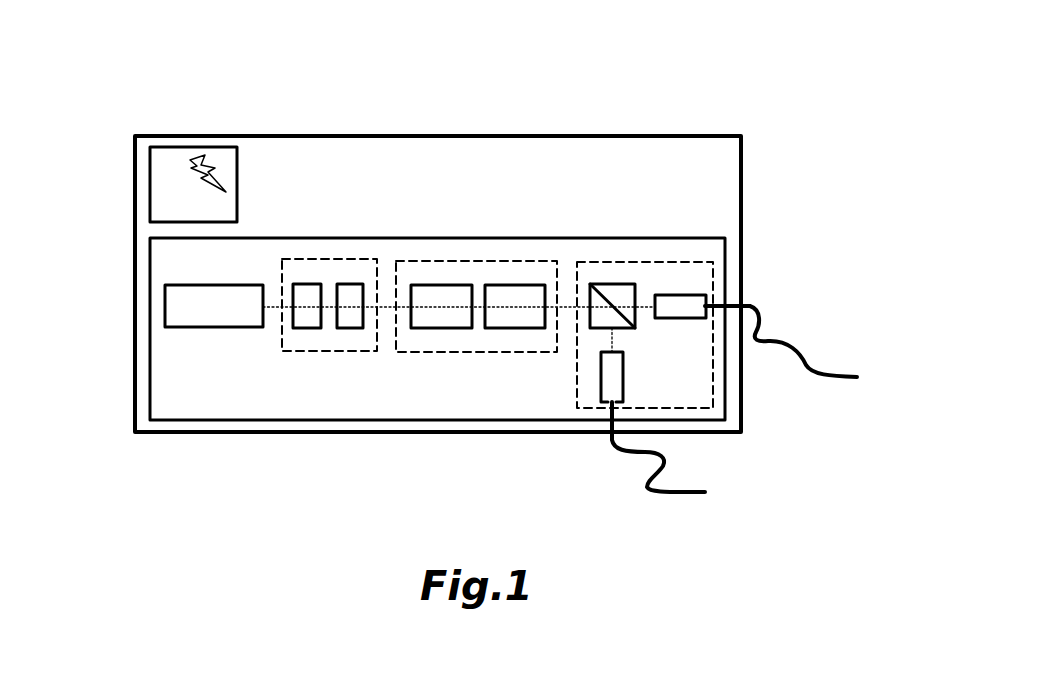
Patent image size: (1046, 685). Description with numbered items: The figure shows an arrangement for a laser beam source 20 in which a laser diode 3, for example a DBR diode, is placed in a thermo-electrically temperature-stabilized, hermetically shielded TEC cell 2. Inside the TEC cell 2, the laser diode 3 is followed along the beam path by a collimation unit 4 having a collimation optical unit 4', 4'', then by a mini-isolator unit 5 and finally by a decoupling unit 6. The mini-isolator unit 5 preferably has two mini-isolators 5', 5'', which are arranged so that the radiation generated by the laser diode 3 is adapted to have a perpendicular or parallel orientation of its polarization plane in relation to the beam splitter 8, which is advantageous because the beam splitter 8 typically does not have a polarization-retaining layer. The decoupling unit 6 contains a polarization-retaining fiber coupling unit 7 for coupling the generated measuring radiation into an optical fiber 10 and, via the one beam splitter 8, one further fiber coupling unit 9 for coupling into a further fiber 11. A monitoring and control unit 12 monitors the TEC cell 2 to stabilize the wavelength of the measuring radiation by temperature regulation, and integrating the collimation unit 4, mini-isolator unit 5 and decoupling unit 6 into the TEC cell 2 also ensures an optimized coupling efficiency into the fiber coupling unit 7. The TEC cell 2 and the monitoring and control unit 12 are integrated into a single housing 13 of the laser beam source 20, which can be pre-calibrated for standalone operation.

The laser beam source 20 is at (258, 100).
The housing 13 is at (734, 115).
The monitoring and control unit 12 is at (177, 198).
The TEC cell 2 is at (202, 402).
The laser diode 3 is at (192, 315).
The collimation unit 4 is at (320, 356).
The collimation optical unit 4' is at (316, 255).
The collimation optical unit 4'' is at (369, 255).
The mini-isolator unit 5 is at (474, 360).
The mini-isolator 5' is at (447, 255).
The mini-isolator 5'' is at (524, 255).
The decoupling unit 6 is at (675, 351).
The beam splitter 8 is at (617, 297).
The polarization-retaining fiber coupling unit 7 is at (698, 302).
The further fiber coupling unit 9 is at (613, 378).
The optical fiber 10 is at (806, 352).
The further fiber 11 is at (662, 463).